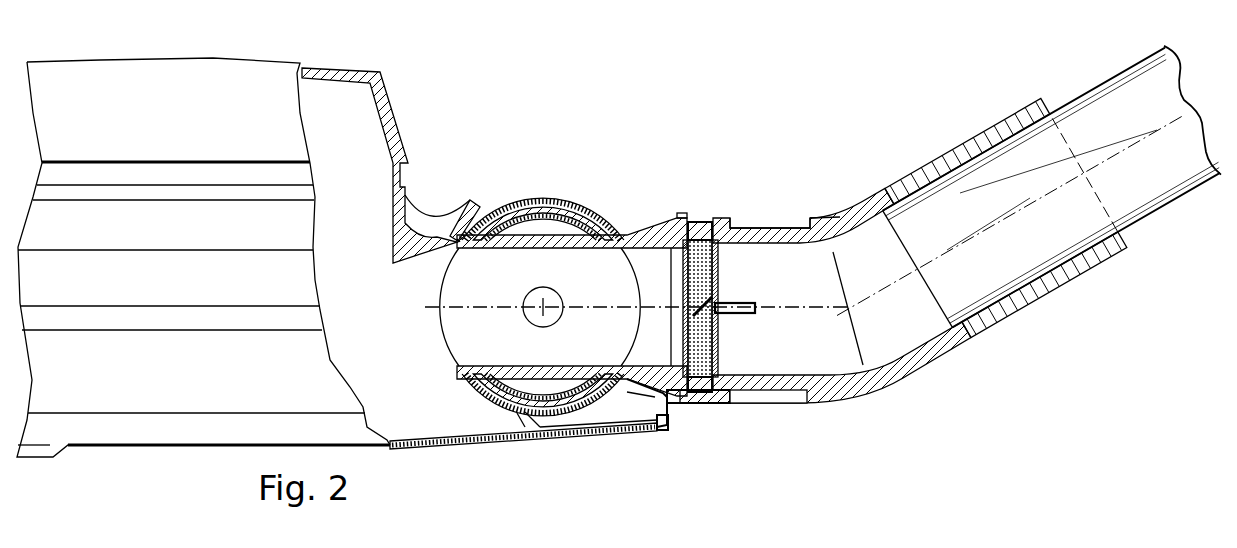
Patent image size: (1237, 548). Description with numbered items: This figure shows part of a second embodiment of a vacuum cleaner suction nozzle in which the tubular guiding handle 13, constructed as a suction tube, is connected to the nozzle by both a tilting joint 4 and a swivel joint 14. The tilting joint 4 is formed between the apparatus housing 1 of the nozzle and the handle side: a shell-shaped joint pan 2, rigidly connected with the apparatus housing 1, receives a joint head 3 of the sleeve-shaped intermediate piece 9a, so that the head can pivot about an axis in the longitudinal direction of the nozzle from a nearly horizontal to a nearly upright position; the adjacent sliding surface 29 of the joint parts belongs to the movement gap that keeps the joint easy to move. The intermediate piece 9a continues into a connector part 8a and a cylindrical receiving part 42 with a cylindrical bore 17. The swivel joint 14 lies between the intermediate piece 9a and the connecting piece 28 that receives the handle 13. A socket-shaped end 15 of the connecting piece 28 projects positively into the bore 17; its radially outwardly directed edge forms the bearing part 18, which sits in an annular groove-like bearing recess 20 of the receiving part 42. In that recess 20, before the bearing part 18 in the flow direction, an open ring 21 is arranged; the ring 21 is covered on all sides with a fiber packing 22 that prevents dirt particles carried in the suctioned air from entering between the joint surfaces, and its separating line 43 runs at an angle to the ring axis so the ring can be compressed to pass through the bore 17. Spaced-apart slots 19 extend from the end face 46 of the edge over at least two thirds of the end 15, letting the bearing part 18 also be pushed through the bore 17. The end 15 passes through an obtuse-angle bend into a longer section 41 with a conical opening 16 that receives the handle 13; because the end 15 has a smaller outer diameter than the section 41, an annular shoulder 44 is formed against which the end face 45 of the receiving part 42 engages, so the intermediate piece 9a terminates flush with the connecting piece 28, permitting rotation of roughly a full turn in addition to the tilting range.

The apparatus housing 1 is at (357, 73).
The joint pan 2 is at (470, 203).
The sliding surface 29 is at (480, 210).
The joint head 3 is at (577, 200).
The intermediate piece 9a is at (682, 204).
The ring 21 is at (702, 230).
The fiber packing 22 is at (683, 265).
The socket-shaped end 15 is at (767, 237).
The annular shoulder 44 is at (800, 220).
The end face 45 is at (828, 218).
The conical opening 16 is at (887, 247).
The connecting piece 28 is at (972, 137).
The guiding handle 13 is at (1043, 137).
The slots 19 is at (732, 305).
The separating line 43 is at (683, 306).
The longer section 41 is at (1010, 317).
The tilting joint 4 is at (518, 414).
The connector part 8a is at (585, 380).
The end face 46 is at (660, 424).
The bearing recess 20 is at (695, 404).
The swivel joint 14 is at (705, 403).
The bearing part 18 is at (725, 404).
The receiving part 42 is at (773, 405).
The bore 17 is at (803, 404).